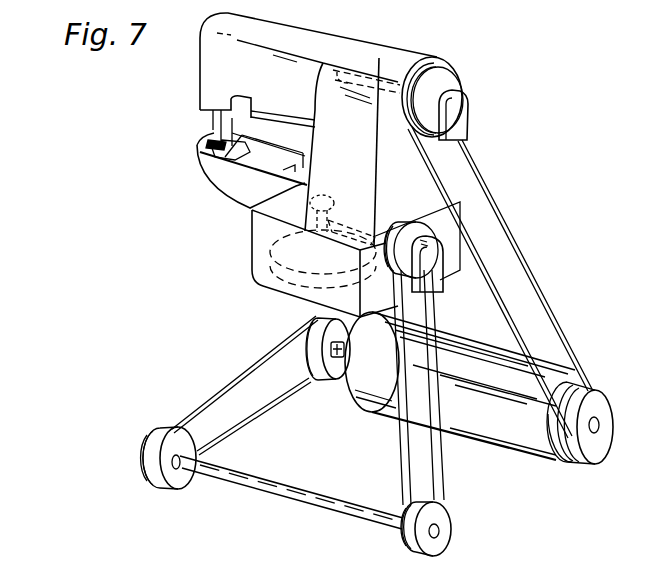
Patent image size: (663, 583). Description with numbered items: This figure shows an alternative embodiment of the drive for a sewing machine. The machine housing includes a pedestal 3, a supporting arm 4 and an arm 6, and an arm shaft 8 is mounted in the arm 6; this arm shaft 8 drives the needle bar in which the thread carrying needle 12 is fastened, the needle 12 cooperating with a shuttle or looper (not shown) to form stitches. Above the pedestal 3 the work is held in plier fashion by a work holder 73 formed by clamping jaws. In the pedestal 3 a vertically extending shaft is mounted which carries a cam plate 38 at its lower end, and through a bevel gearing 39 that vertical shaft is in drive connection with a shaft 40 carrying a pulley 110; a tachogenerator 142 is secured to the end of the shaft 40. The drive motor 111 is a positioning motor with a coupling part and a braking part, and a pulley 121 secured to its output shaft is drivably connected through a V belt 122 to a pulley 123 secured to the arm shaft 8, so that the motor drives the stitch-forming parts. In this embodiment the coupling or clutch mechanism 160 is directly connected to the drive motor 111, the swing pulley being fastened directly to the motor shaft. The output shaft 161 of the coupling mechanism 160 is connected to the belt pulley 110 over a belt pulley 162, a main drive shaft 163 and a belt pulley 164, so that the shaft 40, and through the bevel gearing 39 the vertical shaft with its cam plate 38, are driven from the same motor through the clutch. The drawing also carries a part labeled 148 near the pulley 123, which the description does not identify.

The pedestal 3 is at (356, 310).
The supporting arm 4 is at (249, 195).
The arm 6 is at (353, 47).
The arm shaft 8 is at (363, 73).
The thread carrying needle 12 is at (214, 133).
The cam plate 38 is at (286, 280).
The bevel gearing 39 is at (340, 197).
The shaft 40 is at (370, 228).
The work holder 73 is at (233, 169).
The pulley 110 is at (423, 222).
The drive motor 111 is at (544, 460).
The pulley 121 is at (602, 425).
The V belt 122 is at (565, 332).
The pulley 123 is at (408, 63).
The tachogenerator 142 is at (437, 268).
The bracket 148 is at (462, 122).
The coupling or clutch mechanism 160 is at (359, 417).
The output shaft 161 is at (333, 366).
The belt pulley 162 is at (213, 397).
The main drive shaft 163 is at (268, 483).
The belt pulley 164 is at (442, 465).